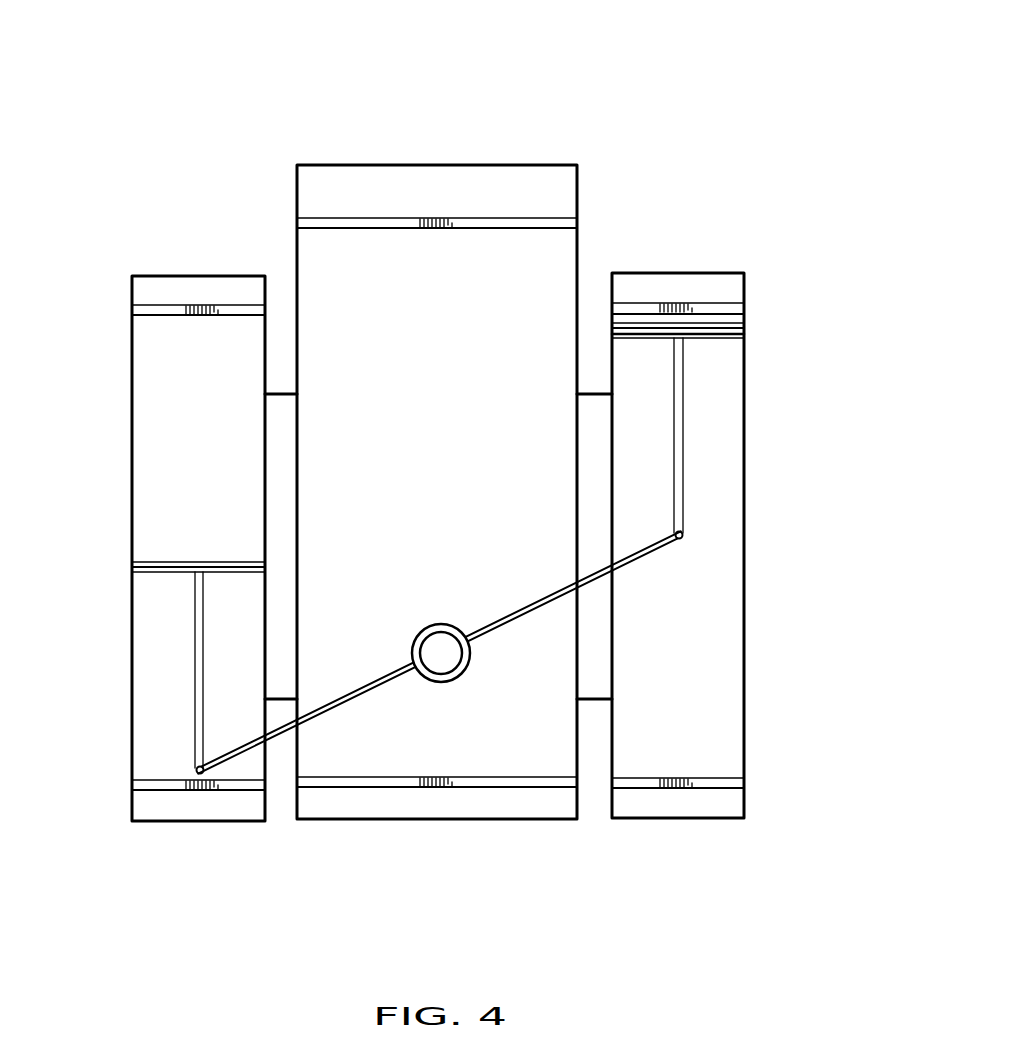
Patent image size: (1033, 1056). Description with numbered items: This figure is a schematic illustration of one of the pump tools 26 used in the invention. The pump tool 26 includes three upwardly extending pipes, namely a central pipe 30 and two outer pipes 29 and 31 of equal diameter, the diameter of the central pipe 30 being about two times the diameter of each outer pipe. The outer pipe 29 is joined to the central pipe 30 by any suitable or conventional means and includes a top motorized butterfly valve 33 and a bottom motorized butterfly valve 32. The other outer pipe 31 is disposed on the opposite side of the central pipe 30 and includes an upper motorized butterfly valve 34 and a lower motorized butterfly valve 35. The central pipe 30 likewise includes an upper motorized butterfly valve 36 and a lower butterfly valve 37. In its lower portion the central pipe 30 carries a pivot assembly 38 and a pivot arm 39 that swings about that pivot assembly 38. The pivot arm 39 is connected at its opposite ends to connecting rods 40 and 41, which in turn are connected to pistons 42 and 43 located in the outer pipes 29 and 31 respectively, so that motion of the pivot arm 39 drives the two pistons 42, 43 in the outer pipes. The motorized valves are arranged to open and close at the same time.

The pump tool 26 is at (630, 70).
The outer pipe 29 is at (132, 372).
The central pipe 30 is at (578, 192).
The outer pipe 31 is at (745, 540).
The bottom motorized butterfly valve 32 is at (148, 782).
The top motorized butterfly valve 33 is at (159, 310).
The upper motorized butterfly valve 34 is at (730, 306).
The lower motorized butterfly valve 35 is at (726, 780).
The upper motorized butterfly valve 36 is at (360, 222).
The lower butterfly valve 37 is at (355, 785).
The pivot assembly 38 is at (441, 625).
The pivot arm 39 is at (525, 612).
The connecting rod 40 is at (196, 640).
The connecting rod 41 is at (684, 467).
The piston 42 is at (173, 560).
The piston 43 is at (725, 336).